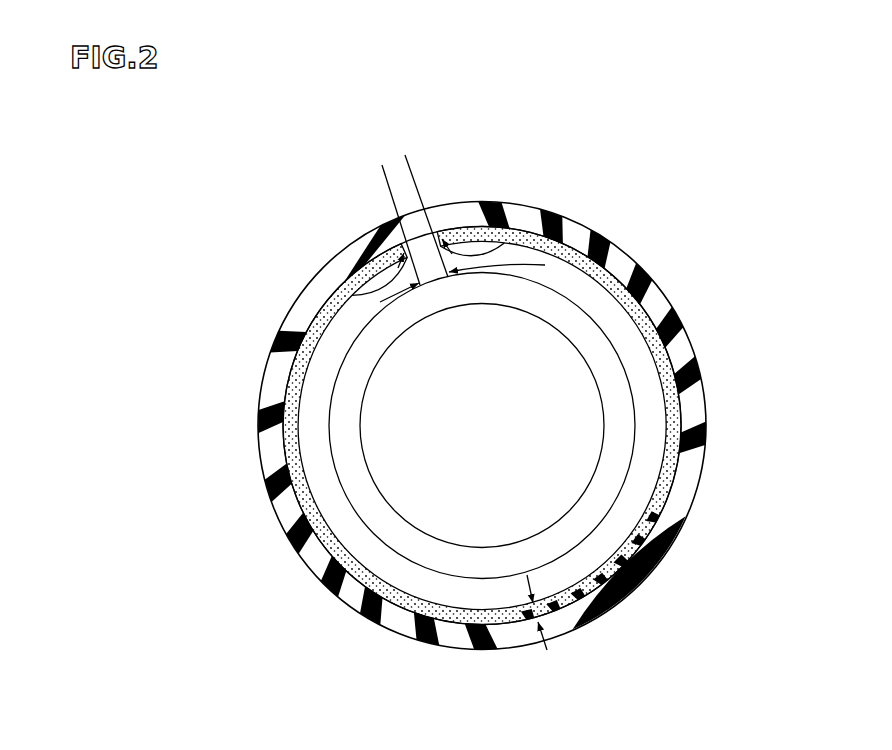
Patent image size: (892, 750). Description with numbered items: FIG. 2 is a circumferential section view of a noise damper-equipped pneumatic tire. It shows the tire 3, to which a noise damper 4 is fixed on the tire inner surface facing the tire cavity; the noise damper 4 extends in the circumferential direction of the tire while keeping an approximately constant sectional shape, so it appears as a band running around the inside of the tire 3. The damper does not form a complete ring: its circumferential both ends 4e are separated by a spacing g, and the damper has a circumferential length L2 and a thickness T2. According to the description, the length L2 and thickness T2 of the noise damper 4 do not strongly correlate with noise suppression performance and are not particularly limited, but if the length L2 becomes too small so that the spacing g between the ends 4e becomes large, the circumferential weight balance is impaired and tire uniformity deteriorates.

The tire 3 is at (690, 485).
The noise damper 4 is at (677, 410).
The circumferential both ends of the noise damper 4e is at (494, 240).
The spacing between circumferential both ends of the noise damper g is at (437, 150).
The circumferential length of the noise damper L2 is at (632, 372).
The thickness of the noise damper T2 is at (547, 620).